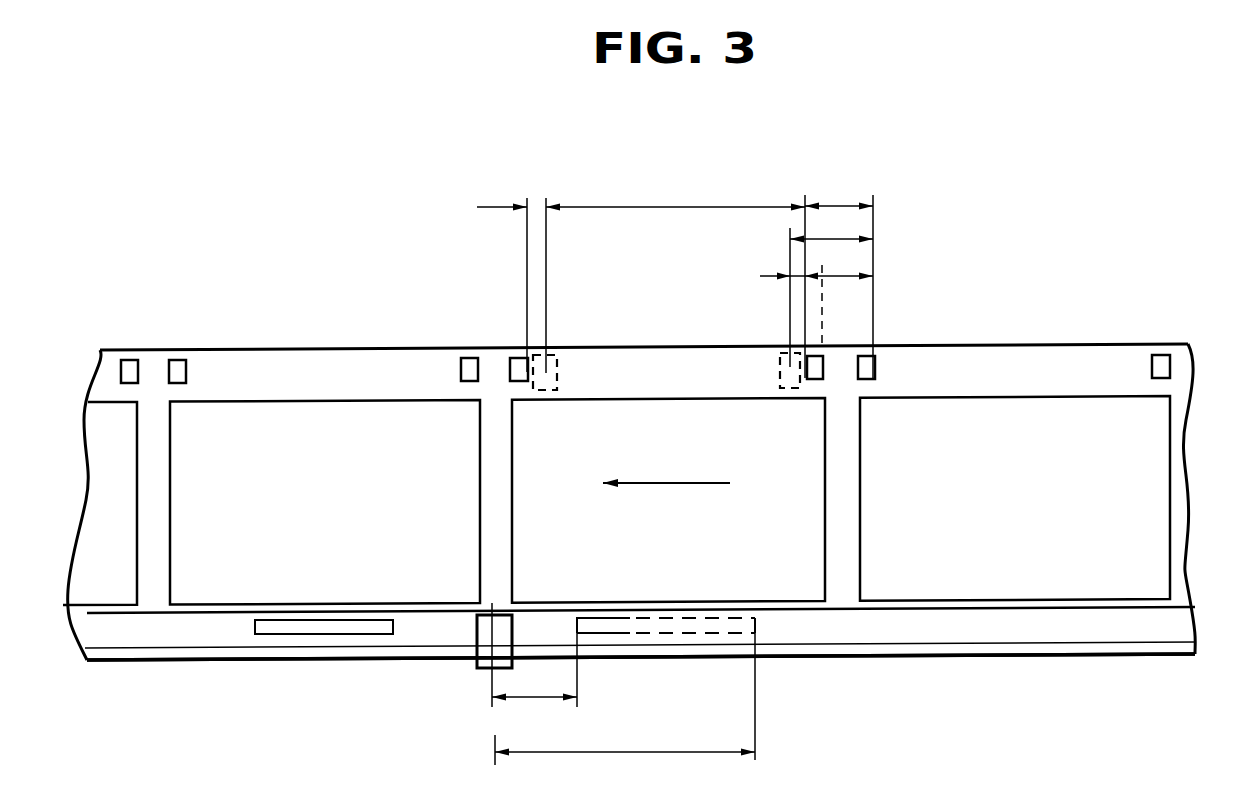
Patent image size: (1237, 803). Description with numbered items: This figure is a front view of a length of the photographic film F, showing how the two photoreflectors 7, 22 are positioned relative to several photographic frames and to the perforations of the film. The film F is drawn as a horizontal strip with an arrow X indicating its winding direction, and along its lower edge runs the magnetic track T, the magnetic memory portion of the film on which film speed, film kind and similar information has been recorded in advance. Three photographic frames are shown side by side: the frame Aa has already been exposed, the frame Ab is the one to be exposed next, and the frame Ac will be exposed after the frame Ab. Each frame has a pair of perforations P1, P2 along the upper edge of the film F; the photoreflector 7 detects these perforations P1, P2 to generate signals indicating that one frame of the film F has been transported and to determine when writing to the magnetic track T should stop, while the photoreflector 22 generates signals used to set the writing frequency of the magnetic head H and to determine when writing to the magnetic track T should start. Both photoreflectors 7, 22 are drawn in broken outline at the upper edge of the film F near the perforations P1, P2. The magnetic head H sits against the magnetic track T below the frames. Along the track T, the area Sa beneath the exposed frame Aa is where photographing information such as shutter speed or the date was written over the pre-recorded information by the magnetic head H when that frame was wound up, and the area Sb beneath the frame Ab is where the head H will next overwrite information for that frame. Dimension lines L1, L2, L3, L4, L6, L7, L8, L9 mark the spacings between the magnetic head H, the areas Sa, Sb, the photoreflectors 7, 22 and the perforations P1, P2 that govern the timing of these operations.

The film F is at (991, 362).
The magnetic track T is at (192, 633).
The photographic frame Aa is at (314, 404).
The photographic frame Ab is at (806, 578).
The photographic frame Ac is at (972, 582).
The perforation P1 is at (177, 359).
The perforation P2 is at (128, 359).
The area Sa is at (308, 628).
The area Sb is at (704, 625).
The magnetic head H is at (484, 664).
The arrow X is at (697, 485).
The photoreflector 7 is at (555, 372).
The photoreflector 22 is at (790, 372).
The distance L1 is at (534, 655).
The distance L2 is at (625, 699).
The distance L3 is at (831, 291).
The distance L4 is at (675, 280).
The distance L6 is at (839, 280).
The distance L7 is at (787, 267).
The distance L8 is at (839, 299).
The distance L9 is at (502, 277).